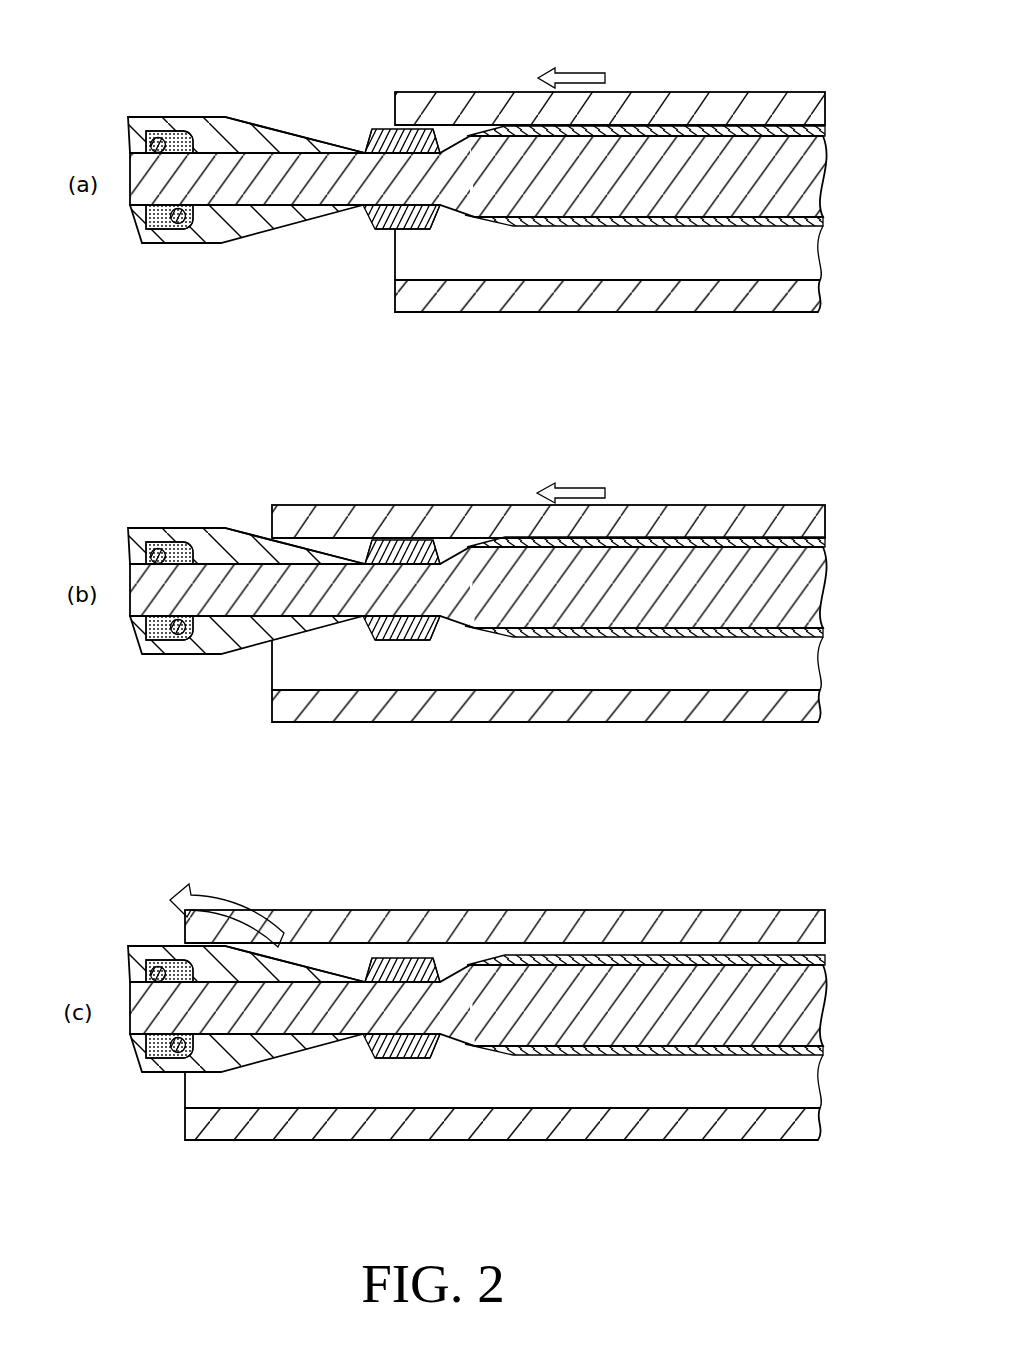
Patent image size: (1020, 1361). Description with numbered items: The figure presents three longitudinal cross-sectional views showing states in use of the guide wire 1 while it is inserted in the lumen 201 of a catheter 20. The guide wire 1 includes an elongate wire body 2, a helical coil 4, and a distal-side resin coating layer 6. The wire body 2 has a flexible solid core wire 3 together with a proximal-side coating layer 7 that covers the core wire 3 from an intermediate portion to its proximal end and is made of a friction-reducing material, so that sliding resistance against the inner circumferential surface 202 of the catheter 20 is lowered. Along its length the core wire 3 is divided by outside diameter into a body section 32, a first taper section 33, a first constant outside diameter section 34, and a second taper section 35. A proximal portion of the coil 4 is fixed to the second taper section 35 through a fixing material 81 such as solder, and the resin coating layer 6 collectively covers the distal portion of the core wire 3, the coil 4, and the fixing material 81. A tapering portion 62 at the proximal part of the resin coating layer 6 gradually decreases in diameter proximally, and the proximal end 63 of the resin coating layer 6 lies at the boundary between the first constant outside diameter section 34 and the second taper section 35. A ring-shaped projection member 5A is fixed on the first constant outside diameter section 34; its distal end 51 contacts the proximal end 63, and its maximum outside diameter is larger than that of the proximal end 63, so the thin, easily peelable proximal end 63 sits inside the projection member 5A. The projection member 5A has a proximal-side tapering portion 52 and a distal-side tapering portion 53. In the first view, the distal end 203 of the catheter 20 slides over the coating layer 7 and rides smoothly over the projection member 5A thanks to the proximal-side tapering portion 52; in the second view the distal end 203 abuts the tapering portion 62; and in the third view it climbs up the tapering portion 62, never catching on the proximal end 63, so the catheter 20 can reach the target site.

The guide wire 1 is at (116, 101).
The wire body 2 is at (708, 113).
The core wire 3 is at (667, 162).
The helical coil 4 is at (187, 229).
The projection member 5A is at (416, 244).
The resin coating layer 6 is at (204, 133).
The coating layer 7 is at (713, 222).
The catheter 20 is at (800, 85).
The body section 32 is at (615, 153).
The first taper section 33 is at (513, 163).
The first constant outside diameter section 34 is at (420, 172).
The second taper section 35 is at (258, 177).
The distal end of the projection member 51 is at (362, 147).
The proximal-side tapering portion 52 is at (443, 210).
The distal-side tapering portion 53 is at (365, 213).
The tapering portion 62 is at (323, 139).
The proximal end of the resin coating layer 63 is at (436, 555).
The fixing material 81 is at (178, 130).
The lumen 201 is at (798, 263).
The inner circumferential surface 202 is at (745, 262).
The distal end of the catheter 203 is at (390, 277).